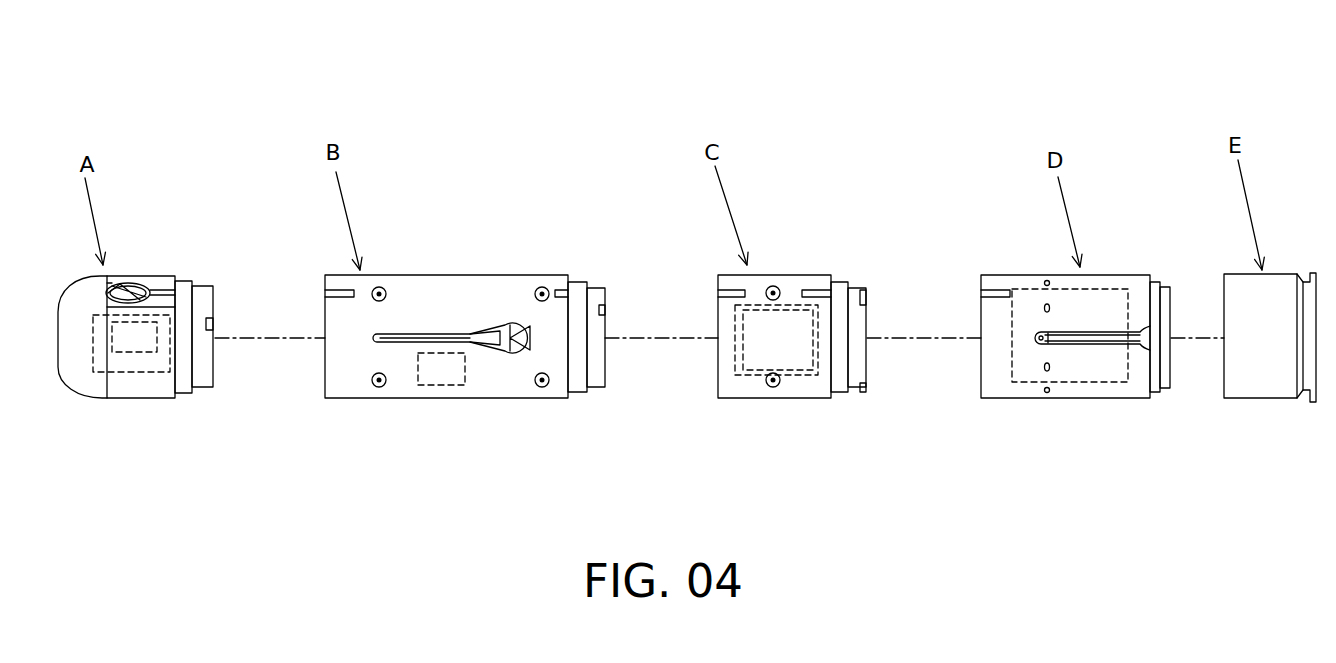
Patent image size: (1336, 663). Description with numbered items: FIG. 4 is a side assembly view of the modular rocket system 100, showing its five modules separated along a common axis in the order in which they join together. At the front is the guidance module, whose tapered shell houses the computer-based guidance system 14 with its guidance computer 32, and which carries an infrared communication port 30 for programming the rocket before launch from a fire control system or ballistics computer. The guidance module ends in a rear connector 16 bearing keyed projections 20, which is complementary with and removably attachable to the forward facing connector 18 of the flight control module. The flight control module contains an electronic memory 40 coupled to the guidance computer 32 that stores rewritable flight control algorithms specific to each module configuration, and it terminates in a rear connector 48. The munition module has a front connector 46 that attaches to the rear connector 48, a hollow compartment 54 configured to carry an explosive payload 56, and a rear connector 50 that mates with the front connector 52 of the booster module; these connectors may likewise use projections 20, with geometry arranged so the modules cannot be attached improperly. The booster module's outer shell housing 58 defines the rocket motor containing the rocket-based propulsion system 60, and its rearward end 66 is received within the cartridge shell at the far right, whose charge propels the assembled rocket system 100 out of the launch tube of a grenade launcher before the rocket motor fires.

The modular rocket system 100 is at (192, 44).
The guidance system 14 is at (130, 373).
The guidance computer 32 is at (125, 346).
The infrared communication port 30 is at (129, 290).
The rear connector 16 is at (200, 283).
The keyed projections 20 is at (211, 322).
The forward facing connector 18 is at (320, 384).
The electronic memory 40 is at (445, 385).
The rear connector 48 is at (593, 386).
The front connector 46 is at (713, 383).
The hollow compartment 54 is at (808, 375).
The payload 56 is at (754, 350).
The rear connector 50 is at (855, 385).
The front connector 52 is at (978, 382).
The outer shell housing 58 is at (1103, 383).
The rocket-based propulsion system 60 is at (1023, 363).
The rearward end 66 is at (1163, 391).